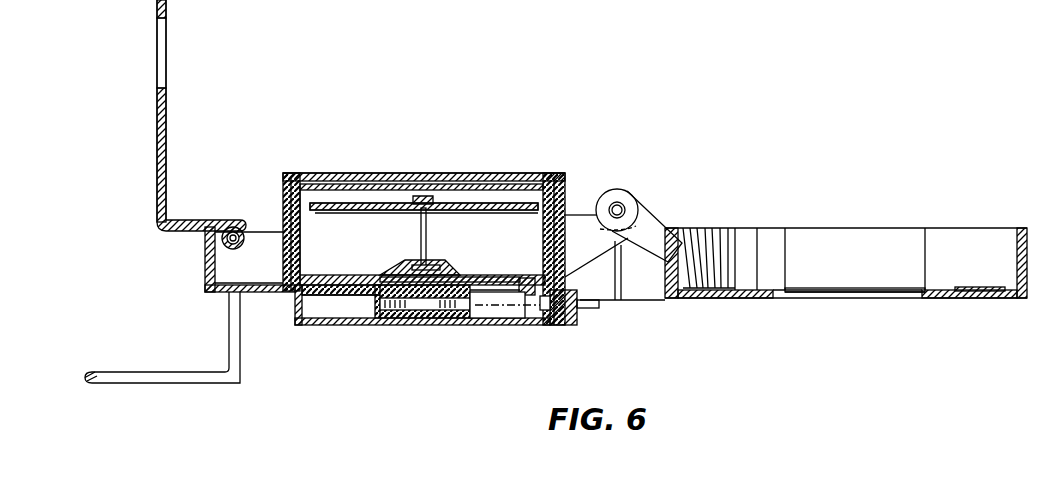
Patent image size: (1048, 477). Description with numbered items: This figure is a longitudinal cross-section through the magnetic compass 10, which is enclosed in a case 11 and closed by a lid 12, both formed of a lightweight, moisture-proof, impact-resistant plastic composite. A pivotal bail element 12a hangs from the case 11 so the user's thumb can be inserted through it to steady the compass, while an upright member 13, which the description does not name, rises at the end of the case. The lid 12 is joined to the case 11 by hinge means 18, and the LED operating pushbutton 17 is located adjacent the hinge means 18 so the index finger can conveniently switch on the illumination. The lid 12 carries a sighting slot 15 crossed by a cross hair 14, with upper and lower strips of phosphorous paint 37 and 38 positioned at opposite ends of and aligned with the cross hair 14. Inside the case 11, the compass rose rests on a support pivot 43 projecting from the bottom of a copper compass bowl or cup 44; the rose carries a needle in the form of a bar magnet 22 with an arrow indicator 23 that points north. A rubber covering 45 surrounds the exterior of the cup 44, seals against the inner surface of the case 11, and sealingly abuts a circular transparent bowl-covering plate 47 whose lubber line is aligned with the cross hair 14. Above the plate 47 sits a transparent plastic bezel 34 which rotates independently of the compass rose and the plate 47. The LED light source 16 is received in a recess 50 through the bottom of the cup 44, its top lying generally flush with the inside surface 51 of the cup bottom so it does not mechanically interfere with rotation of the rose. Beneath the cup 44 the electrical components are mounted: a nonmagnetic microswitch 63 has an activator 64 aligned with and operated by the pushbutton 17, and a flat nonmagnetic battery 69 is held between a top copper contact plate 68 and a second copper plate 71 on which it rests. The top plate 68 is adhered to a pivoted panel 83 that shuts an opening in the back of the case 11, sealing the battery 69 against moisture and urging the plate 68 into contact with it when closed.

The magnetic compass 10 is at (560, 149).
The case 11 is at (311, 330).
The lid 12 is at (935, 305).
The pivotal bail element 12a is at (125, 372).
The upright arm 13 is at (157, 118).
The cross hair 14 is at (838, 288).
The sighting slot 15 is at (852, 296).
The LED light source 16 is at (527, 278).
The LED operating pushbutton 17 is at (602, 314).
The hinge means 18 is at (620, 204).
The bar magnet 22 is at (457, 203).
The arrow indicator 23 is at (424, 206).
The transparent plastic bezel 34 is at (290, 182).
The upper strip of phosphorous paint 37 is at (985, 287).
The lower strip of phosphorous paint 38 is at (718, 282).
The support pivot 43 is at (421, 232).
The compass bowl or cup 44 is at (302, 240).
The rubber covering 45 is at (302, 268).
The bowl-covering plate 47 is at (378, 184).
The recess 50 is at (510, 290).
The inside surface 51 is at (468, 277).
The nonmagnetic microswitch 63 is at (500, 320).
The activator 64 is at (556, 325).
The copper plate 68 is at (435, 325).
The nonmagnetic battery 69 is at (400, 325).
The second copper plate 71 is at (390, 325).
The panel 83 is at (458, 322).